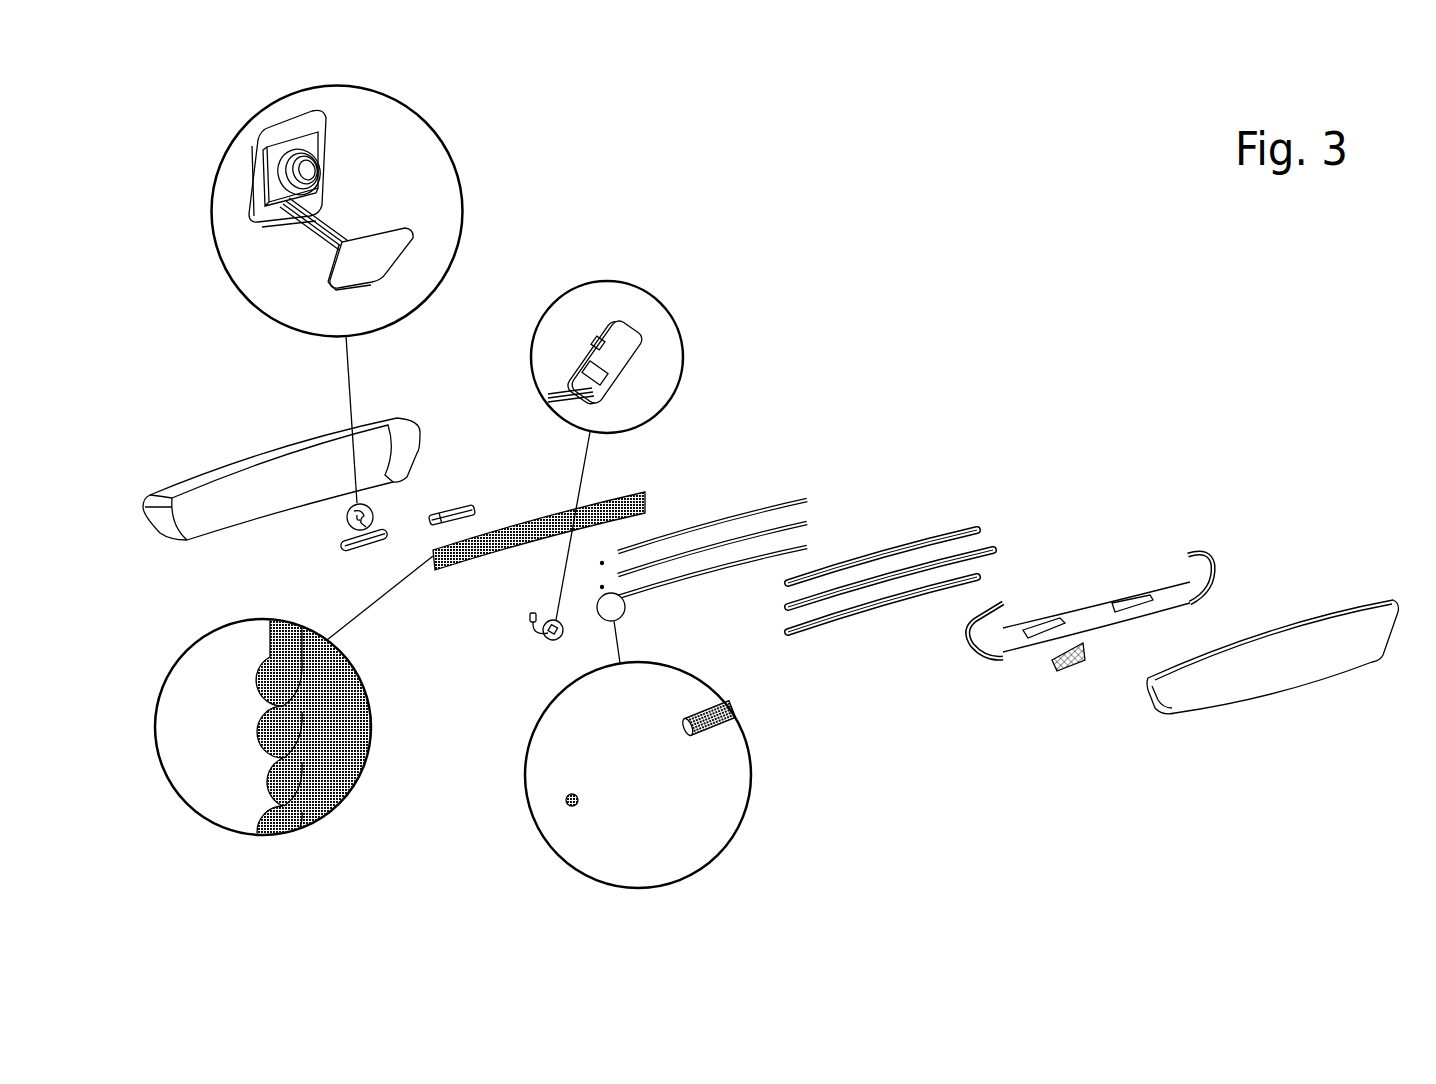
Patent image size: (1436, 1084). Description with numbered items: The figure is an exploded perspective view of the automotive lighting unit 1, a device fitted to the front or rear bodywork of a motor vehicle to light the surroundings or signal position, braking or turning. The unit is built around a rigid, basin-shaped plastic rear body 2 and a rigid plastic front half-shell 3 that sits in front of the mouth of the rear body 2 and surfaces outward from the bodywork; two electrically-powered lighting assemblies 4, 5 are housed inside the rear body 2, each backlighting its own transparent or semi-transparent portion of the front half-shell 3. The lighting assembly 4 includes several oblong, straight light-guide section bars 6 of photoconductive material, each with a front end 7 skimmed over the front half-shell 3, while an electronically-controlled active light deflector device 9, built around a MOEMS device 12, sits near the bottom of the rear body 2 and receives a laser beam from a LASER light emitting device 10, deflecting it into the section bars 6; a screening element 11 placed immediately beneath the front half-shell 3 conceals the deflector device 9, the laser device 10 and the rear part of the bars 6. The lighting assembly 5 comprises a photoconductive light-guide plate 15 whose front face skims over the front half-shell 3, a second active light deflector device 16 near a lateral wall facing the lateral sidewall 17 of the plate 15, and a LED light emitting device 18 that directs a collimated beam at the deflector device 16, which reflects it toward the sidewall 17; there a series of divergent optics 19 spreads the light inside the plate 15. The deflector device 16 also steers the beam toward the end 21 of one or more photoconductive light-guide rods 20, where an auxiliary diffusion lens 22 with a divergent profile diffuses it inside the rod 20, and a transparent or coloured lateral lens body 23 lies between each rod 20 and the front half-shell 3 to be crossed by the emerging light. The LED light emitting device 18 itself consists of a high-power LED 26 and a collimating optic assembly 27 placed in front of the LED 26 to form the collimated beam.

The automotive lighting unit 1 is at (965, 207).
The rear body 2 is at (203, 475).
The front half-shell 3 is at (1288, 668).
The lighting assembly 4 is at (325, 505).
The lighting assembly 5 is at (638, 462).
The light-guide section bar 6 is at (340, 547).
The front end 7 is at (365, 550).
The active light deflector device 9 is at (275, 143).
The LASER light emitting device 10 is at (372, 230).
The screening element 11 is at (1078, 617).
The MOEMS device 12 is at (308, 170).
The light-guide plate 15 is at (465, 553).
The second active light deflector device 16 is at (528, 647).
The lateral sidewall 17 is at (258, 729).
The LED light emitting device 18 is at (598, 328).
The divergent optics 19 is at (262, 675).
The light-guide rod 20 is at (697, 528).
The end 21 is at (688, 723).
The auxiliary diffusion lens 22 is at (567, 805).
The lateral lens body 23 is at (847, 562).
The high-power LED 26 is at (613, 350).
The collimating optic assembly 27 is at (593, 342).